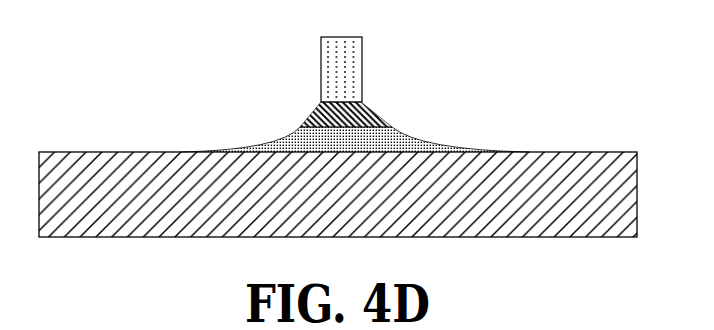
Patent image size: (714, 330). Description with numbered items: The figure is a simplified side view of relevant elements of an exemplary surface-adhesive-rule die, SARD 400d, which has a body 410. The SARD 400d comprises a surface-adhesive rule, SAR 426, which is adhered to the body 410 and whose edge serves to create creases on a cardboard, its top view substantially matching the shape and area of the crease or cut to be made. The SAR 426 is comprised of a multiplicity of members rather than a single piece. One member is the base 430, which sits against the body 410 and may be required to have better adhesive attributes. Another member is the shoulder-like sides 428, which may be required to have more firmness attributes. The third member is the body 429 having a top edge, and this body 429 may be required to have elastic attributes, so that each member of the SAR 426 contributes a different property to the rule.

The SARD 400d is at (132, 86).
The body 410 is at (565, 152).
The SAR 426 is at (432, 56).
The shoulder-like sides 428 is at (374, 119).
The body 429 is at (362, 48).
The base 430 is at (407, 140).